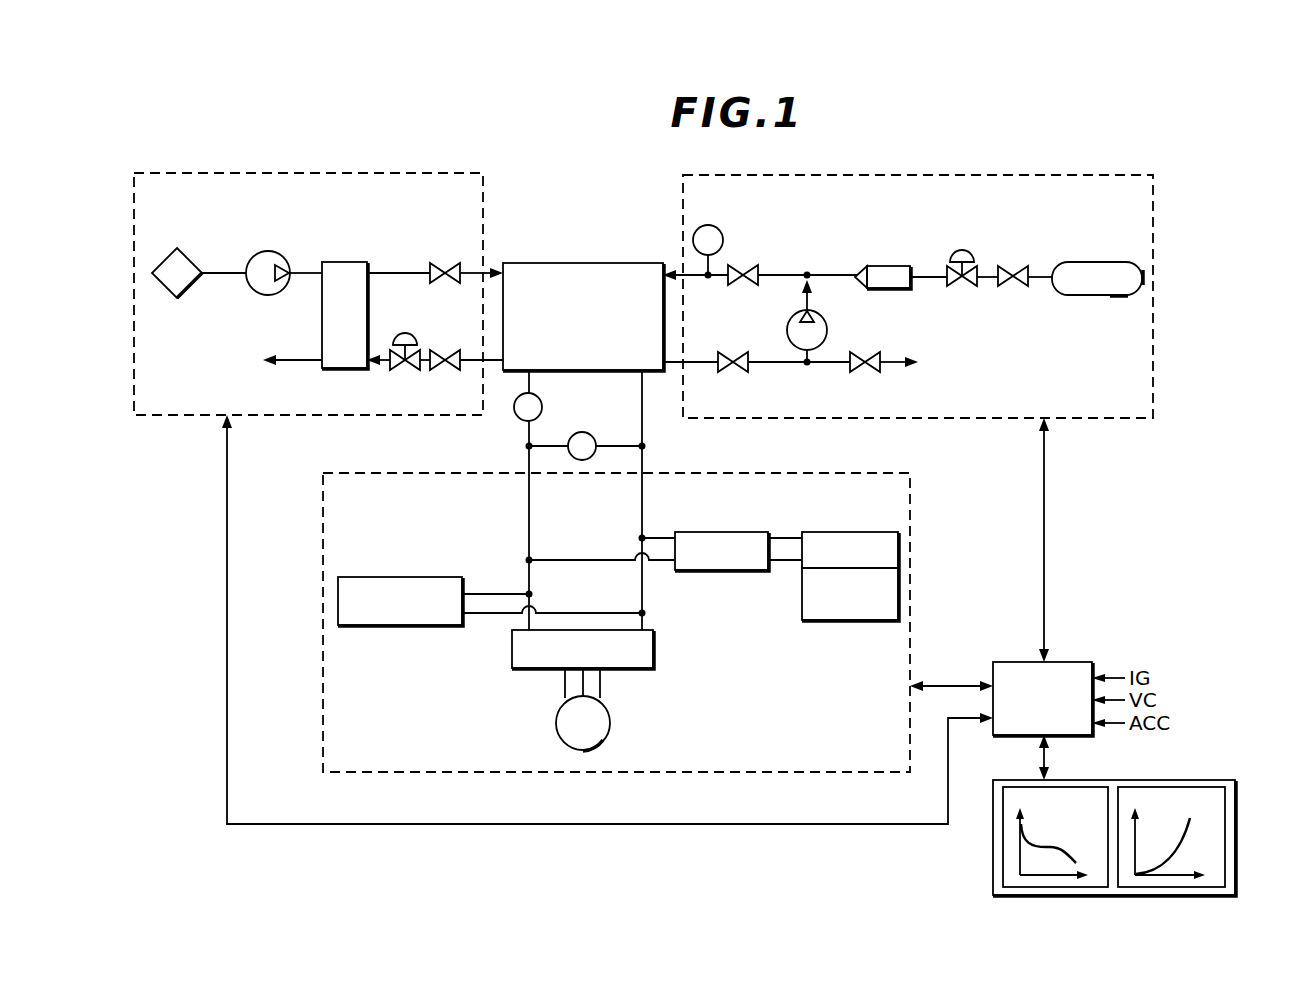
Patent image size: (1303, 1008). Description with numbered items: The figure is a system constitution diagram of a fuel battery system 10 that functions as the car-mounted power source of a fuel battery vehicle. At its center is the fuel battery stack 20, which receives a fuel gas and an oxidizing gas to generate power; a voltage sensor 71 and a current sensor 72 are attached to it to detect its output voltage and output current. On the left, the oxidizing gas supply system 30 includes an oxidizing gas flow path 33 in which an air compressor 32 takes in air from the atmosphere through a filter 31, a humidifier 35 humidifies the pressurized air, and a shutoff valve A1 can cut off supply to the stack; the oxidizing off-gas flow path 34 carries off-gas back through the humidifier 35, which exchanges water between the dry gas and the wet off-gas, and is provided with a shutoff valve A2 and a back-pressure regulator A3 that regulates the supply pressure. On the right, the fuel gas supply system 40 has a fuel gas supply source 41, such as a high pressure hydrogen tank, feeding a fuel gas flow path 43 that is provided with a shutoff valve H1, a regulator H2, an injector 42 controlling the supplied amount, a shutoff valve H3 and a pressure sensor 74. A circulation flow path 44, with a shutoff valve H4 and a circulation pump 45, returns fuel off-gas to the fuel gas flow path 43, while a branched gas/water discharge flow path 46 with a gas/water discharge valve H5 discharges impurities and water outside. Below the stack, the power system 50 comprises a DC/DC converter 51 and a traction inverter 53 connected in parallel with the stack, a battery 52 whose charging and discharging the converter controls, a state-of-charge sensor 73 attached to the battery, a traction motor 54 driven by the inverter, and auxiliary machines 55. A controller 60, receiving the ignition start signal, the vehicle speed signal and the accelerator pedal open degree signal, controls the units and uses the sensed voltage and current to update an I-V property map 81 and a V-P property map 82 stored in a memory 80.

The fuel battery system 10 is at (1126, 152).
The fuel battery stack 20 is at (583, 263).
The oxidizing gas supply system 30 is at (483, 200).
The filter 31 is at (190, 258).
The air compressor 32 is at (268, 251).
The oxidizing gas flow path 33 is at (388, 273).
The oxidizing off-gas flow path 34 is at (453, 360).
The humidifier 35 is at (345, 262).
The shutoff valve A1 is at (440, 270).
The shutoff valve A2 is at (443, 368).
The back-pressure regulator A3 is at (410, 333).
The fuel gas supply system 40 is at (1155, 240).
The fuel gas supply source 41 is at (1095, 262).
The injector 42 is at (885, 266).
The fuel gas flow path 43 is at (782, 275).
The circulation flow path 44 is at (775, 362).
The circulation pump 45 is at (829, 336).
The gas/water discharge flow path 46 is at (893, 360).
The shutoff valve H1 is at (1018, 268).
The regulator H2 is at (962, 250).
The shutoff valve H3 is at (745, 268).
The shutoff valve H4 is at (738, 370).
The gas/water discharge valve H5 is at (860, 370).
The power system 50 is at (912, 540).
The DC/DC converter 51 is at (720, 532).
The battery 52 is at (830, 532).
The traction inverter 53 is at (655, 652).
The traction motor 54 is at (612, 723).
The auxiliary machines 55 is at (415, 577).
The controller 60 is at (1070, 662).
The voltage sensor 71 is at (572, 436).
The current sensor 72 is at (514, 411).
The SOC sensor 73 is at (845, 620).
The pressure sensor 74 is at (708, 225).
The memory 80 is at (1195, 780).
The I-V property map 81 is at (1003, 875).
The V-P property map 82 is at (1235, 856).